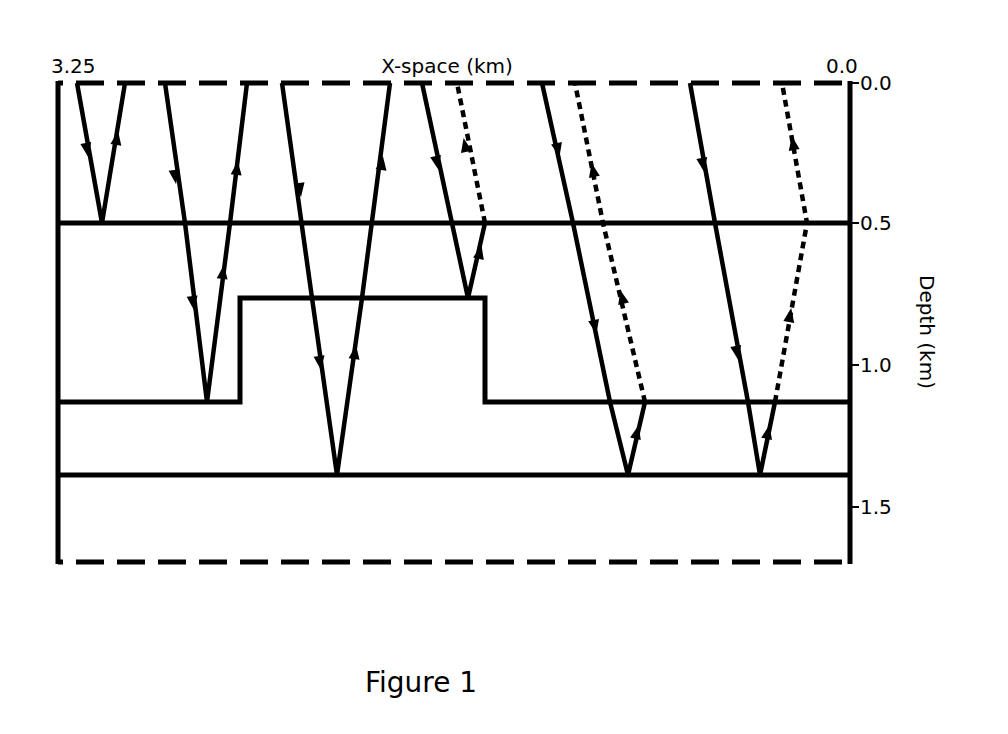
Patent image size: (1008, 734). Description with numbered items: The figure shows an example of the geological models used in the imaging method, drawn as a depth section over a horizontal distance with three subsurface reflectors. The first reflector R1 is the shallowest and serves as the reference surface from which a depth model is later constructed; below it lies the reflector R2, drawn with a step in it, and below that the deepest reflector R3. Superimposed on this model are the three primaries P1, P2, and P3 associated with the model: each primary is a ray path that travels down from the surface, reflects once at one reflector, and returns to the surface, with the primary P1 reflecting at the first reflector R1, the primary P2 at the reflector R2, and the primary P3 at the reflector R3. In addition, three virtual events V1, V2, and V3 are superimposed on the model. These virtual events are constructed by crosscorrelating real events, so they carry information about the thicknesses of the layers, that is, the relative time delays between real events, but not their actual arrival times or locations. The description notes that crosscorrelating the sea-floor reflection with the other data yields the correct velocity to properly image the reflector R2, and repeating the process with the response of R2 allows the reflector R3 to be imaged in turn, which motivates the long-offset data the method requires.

The first reflector R1 is at (435, 223).
The reflector R2 is at (435, 357).
The reflector R3 is at (435, 476).
The primary P1 is at (101, 171).
The primary P2 is at (206, 260).
The primary P3 is at (336, 295).
The virtual event V1 is at (453, 207).
The virtual event V2 is at (594, 295).
The virtual event V3 is at (748, 295).